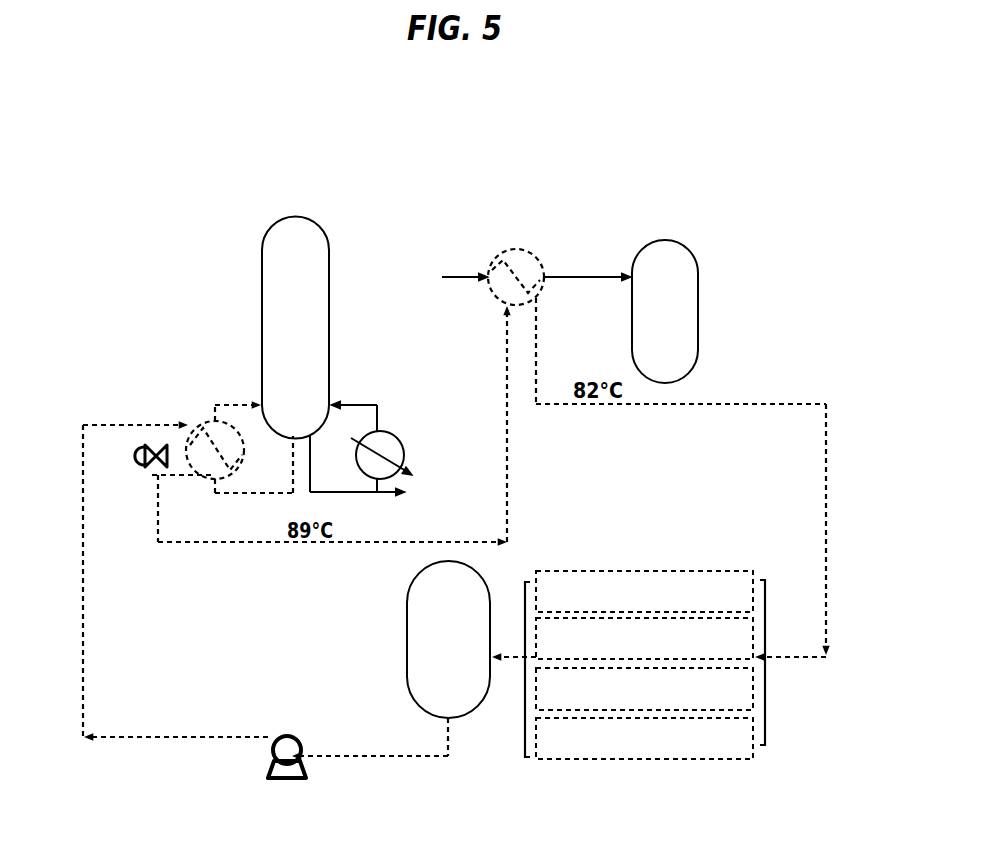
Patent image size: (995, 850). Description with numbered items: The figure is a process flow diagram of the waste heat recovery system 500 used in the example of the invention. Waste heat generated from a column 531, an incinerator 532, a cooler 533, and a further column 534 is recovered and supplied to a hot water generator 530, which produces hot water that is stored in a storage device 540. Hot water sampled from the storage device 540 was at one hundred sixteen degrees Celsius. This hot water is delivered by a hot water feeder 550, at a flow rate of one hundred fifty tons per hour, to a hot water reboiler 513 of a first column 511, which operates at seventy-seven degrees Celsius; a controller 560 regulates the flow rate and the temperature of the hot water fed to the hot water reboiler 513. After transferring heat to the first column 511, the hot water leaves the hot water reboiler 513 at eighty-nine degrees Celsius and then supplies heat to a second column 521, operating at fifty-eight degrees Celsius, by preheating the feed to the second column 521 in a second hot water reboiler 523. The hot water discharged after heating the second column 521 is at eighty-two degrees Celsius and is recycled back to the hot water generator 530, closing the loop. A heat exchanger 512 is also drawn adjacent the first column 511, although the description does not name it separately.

The ethylene oxide recovery system 500 is at (483, 160).
The first column 511 is at (328, 240).
The heat exchanger 512 is at (398, 432).
The hot water reboiler 513 is at (213, 410).
The second column 521 is at (697, 274).
The hot water reboiler 523 is at (541, 258).
The hot water generator 530 is at (611, 697).
The column 531 is at (644, 592).
The incinerator 532 is at (644, 640).
The cooler 533 is at (644, 689).
The column 534 is at (644, 738).
The storage device 540 is at (406, 620).
The hot water feeder 550 is at (283, 735).
The controller 560 is at (143, 468).